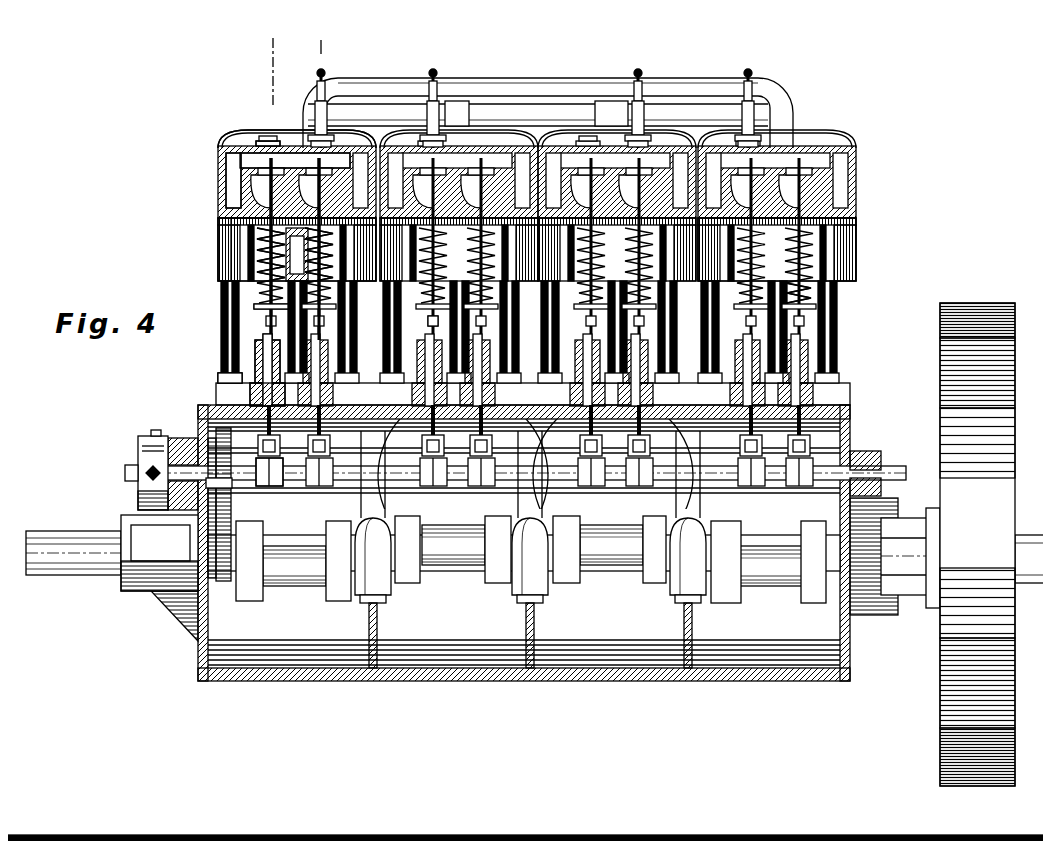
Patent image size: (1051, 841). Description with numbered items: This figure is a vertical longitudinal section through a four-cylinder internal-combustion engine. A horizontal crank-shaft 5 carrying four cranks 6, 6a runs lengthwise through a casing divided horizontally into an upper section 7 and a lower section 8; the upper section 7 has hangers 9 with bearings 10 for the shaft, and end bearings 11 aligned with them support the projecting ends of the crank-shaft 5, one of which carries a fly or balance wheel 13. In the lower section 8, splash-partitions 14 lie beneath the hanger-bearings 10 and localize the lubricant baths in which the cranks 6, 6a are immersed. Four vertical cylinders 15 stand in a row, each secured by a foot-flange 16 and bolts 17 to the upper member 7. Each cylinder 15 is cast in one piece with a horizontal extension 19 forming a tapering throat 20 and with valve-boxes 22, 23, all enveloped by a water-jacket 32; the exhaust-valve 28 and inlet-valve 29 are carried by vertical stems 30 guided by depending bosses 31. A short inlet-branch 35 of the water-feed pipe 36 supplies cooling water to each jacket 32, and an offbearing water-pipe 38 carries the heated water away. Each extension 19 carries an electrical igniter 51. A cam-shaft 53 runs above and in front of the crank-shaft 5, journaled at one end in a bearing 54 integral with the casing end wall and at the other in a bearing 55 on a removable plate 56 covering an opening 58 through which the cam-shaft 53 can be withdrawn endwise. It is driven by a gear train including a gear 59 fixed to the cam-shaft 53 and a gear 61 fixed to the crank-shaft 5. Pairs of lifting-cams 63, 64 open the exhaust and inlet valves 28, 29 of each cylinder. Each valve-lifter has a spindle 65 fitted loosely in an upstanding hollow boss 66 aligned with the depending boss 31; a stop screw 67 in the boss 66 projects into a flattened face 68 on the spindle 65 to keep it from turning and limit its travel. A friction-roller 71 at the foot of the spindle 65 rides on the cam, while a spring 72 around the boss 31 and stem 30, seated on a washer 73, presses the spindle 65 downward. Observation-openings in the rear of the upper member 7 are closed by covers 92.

The crank-shaft 5 is at (58, 530).
The crank 6 is at (420, 560).
The crank 6a is at (278, 582).
The upper section of casing 7 is at (190, 410).
The lower section of casing 8 is at (470, 673).
The hangers 9 is at (352, 480).
The bearings 10 is at (256, 682).
The bearings 11 is at (900, 491).
The fly or balance wheel 13 is at (985, 482).
The splash-partitions 14 is at (369, 610).
The cylinders 15 is at (246, 298).
The foot-flange 16 is at (215, 376).
The bolts 17 is at (218, 364).
The horizontal extension 19 is at (285, 128).
The tapering throat 20 is at (226, 133).
The valve-box 22 is at (533, 249).
The valve-box 23 is at (533, 249).
The exhaust-valve 28 is at (236, 156).
The inlet-valve 29 is at (350, 118).
The valve stems 30 is at (256, 244).
The depending bosses 31 is at (238, 232).
The water-jacket 32 is at (212, 181).
The inlet-branch 35 is at (308, 88).
The water-feed pipe 36 is at (526, 100).
The offbearing water-pipe 38 is at (326, 247).
The electrical igniter 51 is at (318, 70).
The cam-shaft 53 is at (375, 478).
The bearing 54 is at (858, 446).
The bearing 55 is at (175, 446).
The removable plate 56 is at (140, 449).
The opening 58 is at (210, 497).
The gear 59 is at (224, 484).
The gear 61 is at (215, 580).
The tappet or lifting-cam 63 is at (462, 345).
The tappet or lifting-cam 64 is at (302, 482).
The spindle 65 is at (365, 386).
The hollow boss 66 is at (255, 386).
The stop screw 67 is at (412, 319).
The flattened face 68 is at (425, 318).
The friction-roller 71 is at (272, 452).
The spring 72 is at (855, 252).
The washer 73 is at (810, 299).
The covers 92 is at (250, 266).